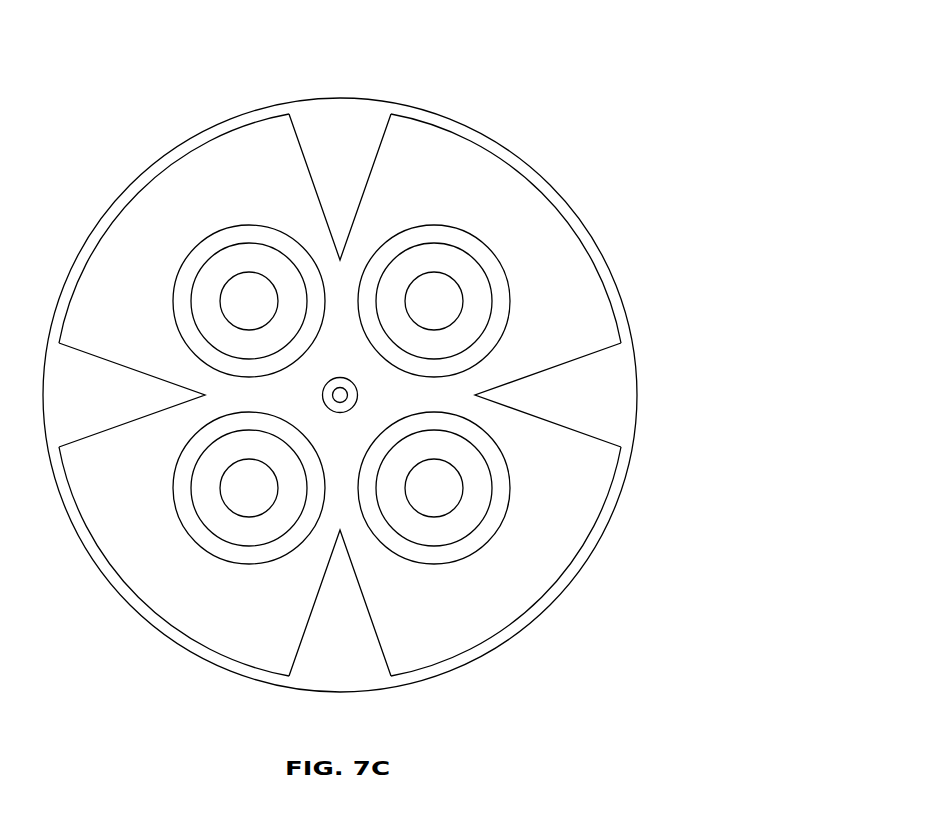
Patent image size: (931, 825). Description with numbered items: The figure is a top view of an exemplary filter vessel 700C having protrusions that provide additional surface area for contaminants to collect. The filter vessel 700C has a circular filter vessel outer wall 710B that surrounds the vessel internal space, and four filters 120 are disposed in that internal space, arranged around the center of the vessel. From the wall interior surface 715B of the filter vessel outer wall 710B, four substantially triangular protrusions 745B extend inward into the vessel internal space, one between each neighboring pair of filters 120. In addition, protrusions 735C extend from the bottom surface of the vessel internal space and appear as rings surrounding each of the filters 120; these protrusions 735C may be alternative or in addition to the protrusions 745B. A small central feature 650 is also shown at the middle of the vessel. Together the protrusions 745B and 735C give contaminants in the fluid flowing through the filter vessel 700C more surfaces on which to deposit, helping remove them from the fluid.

The filter vessel 700C is at (522, 60).
The filter vessel outer wall 710B is at (542, 180).
The wall interior surface 715B is at (573, 223).
The protrusions 745B is at (333, 160).
The protrusions 735C is at (178, 272).
The filters 120 is at (217, 273).
The center fastener hole 650 is at (358, 395).